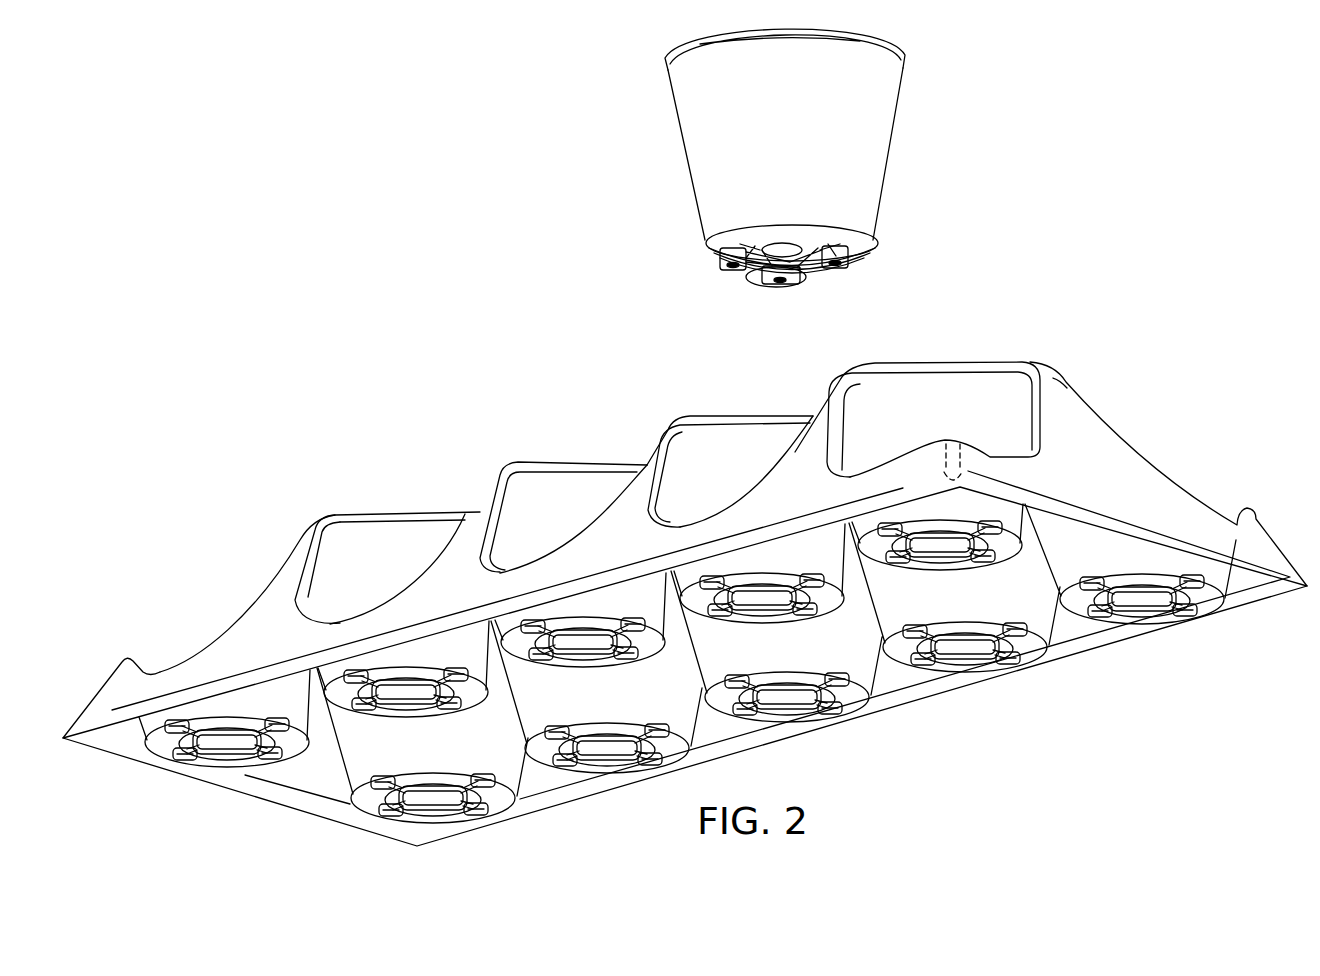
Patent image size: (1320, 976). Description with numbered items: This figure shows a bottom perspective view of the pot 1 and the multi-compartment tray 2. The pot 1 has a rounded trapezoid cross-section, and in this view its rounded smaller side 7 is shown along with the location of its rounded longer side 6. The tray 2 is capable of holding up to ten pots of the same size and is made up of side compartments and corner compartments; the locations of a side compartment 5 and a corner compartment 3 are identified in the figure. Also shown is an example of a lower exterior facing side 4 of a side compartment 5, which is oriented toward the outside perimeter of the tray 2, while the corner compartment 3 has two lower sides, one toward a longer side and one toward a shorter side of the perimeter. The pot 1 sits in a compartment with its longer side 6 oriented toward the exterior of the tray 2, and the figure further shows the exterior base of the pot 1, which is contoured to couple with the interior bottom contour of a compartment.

The pot 1 is at (946, 149).
The multi-compartment tray 2 is at (205, 815).
The corner compartment 3 is at (1240, 500).
The lower side 4 is at (323, 623).
The side compartment 5 is at (400, 513).
The rounded longer side 6 is at (884, 182).
The rounded shorter side 7 is at (703, 167).